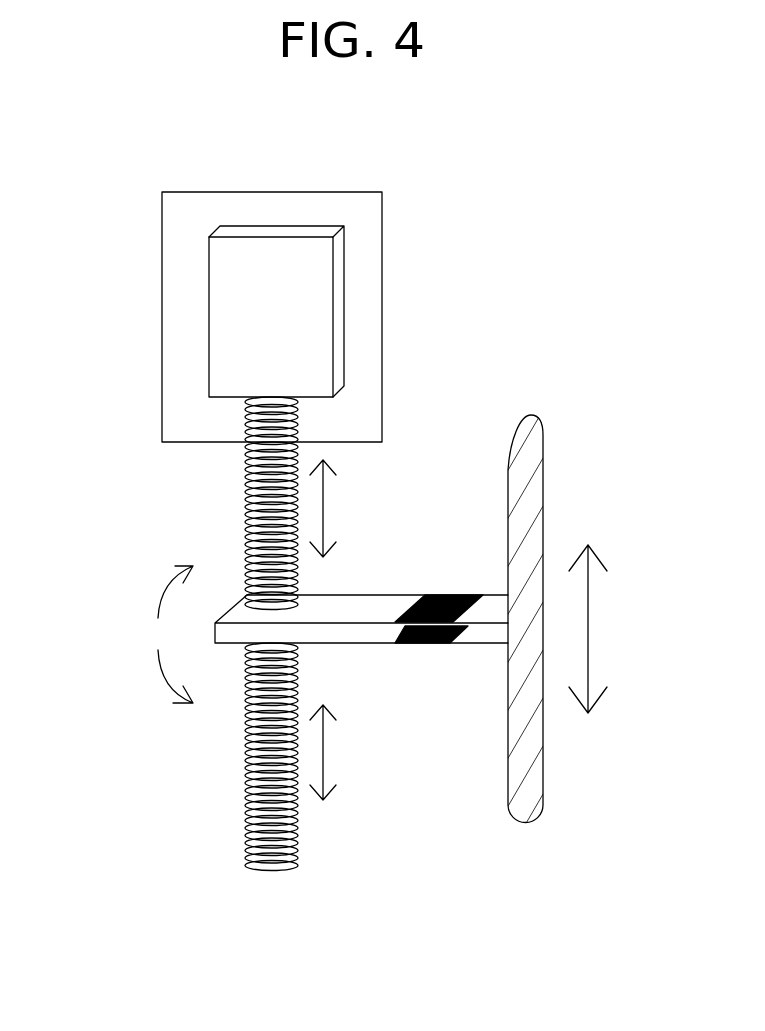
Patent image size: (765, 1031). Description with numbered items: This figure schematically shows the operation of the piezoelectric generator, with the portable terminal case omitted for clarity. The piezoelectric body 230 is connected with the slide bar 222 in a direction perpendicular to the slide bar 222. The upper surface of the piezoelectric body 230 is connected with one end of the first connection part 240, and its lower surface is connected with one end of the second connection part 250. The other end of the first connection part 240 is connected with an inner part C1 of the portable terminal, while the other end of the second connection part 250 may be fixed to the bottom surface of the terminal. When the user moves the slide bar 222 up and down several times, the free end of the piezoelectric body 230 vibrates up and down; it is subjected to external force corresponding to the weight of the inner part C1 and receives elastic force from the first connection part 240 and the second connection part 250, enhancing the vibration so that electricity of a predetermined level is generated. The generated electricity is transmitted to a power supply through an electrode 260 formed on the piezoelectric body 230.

The inner part of the portable terminal C1 is at (292, 322).
The first connection part 240 is at (247, 454).
The piezoelectric body 230 is at (250, 598).
The second connection part 250 is at (247, 758).
The electrode 260 is at (453, 594).
The slide bar 222 is at (528, 495).